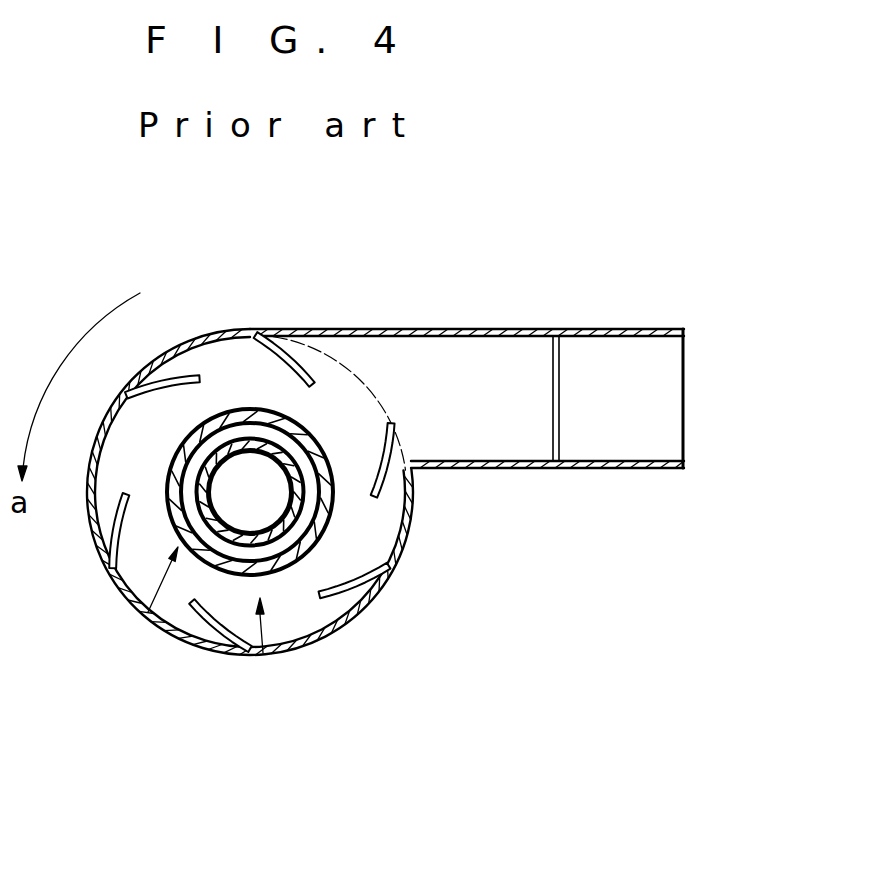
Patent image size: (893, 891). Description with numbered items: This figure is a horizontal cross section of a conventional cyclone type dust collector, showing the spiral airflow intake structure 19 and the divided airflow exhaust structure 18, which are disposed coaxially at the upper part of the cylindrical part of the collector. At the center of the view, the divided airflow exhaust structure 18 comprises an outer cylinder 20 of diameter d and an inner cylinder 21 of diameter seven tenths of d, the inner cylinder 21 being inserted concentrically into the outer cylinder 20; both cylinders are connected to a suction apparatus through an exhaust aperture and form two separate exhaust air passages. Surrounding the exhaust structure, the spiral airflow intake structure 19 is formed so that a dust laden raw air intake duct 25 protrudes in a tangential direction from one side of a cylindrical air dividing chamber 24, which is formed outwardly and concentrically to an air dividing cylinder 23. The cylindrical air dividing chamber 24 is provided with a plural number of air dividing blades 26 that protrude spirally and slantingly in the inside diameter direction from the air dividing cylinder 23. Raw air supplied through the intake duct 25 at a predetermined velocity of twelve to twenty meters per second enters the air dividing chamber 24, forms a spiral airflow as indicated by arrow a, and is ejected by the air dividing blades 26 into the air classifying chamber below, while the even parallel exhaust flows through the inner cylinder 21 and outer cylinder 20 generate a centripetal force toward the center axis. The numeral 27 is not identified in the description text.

The divided airflow exhaust structure 18 is at (148, 612).
The spiral airflow intake structure 19 is at (327, 641).
The outer cylinder 20 is at (337, 500).
The inner cylinder 21 is at (292, 528).
The air dividing cylinder 23 is at (287, 657).
The cylindrical air dividing chamber 24 is at (263, 653).
The dust laden raw air intake duct 25 is at (553, 467).
The air dividing blades 26 is at (300, 363).
The discharge duct 27 is at (685, 410).